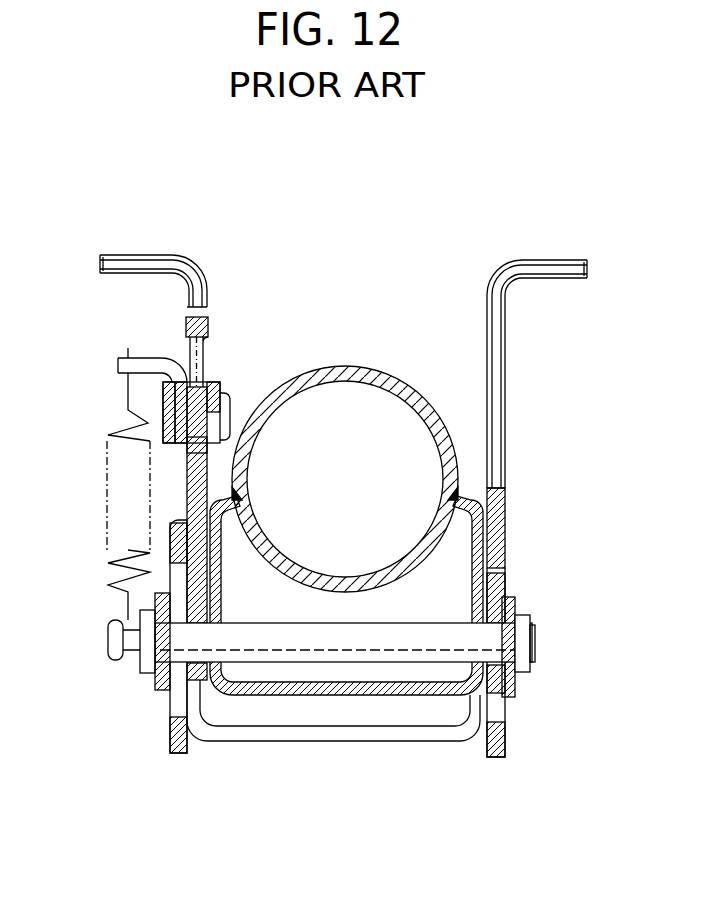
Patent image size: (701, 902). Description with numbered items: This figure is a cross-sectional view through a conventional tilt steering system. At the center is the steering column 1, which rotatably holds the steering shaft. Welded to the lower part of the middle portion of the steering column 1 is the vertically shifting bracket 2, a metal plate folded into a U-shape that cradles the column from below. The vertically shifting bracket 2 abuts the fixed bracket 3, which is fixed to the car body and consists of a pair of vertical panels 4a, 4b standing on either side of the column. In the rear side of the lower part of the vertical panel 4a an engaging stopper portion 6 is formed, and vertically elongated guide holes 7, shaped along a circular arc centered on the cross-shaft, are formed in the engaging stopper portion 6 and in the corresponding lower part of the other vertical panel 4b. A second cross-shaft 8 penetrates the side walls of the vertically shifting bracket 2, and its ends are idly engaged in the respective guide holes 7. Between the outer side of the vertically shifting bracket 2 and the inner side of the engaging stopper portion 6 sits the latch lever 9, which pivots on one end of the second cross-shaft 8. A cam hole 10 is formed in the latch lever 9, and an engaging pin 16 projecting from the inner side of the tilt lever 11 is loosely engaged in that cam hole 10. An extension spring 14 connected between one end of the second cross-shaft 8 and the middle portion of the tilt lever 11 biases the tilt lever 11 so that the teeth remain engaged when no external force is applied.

The steering column 1 is at (358, 372).
The vertically shifting bracket 2 is at (423, 690).
The fixed bracket 3 is at (548, 280).
The vertical panel 4a is at (207, 288).
The vertical panel 4b is at (505, 405).
The engaging stopper portion 6 is at (170, 700).
The guide holes 7 is at (505, 580).
The second cross-shaft 8 is at (285, 645).
The latch lever 9 is at (195, 577).
The cam hole 10 is at (208, 347).
The tilt lever 11 is at (153, 357).
The extension spring 14 is at (108, 585).
The engaging pin 16 is at (163, 400).